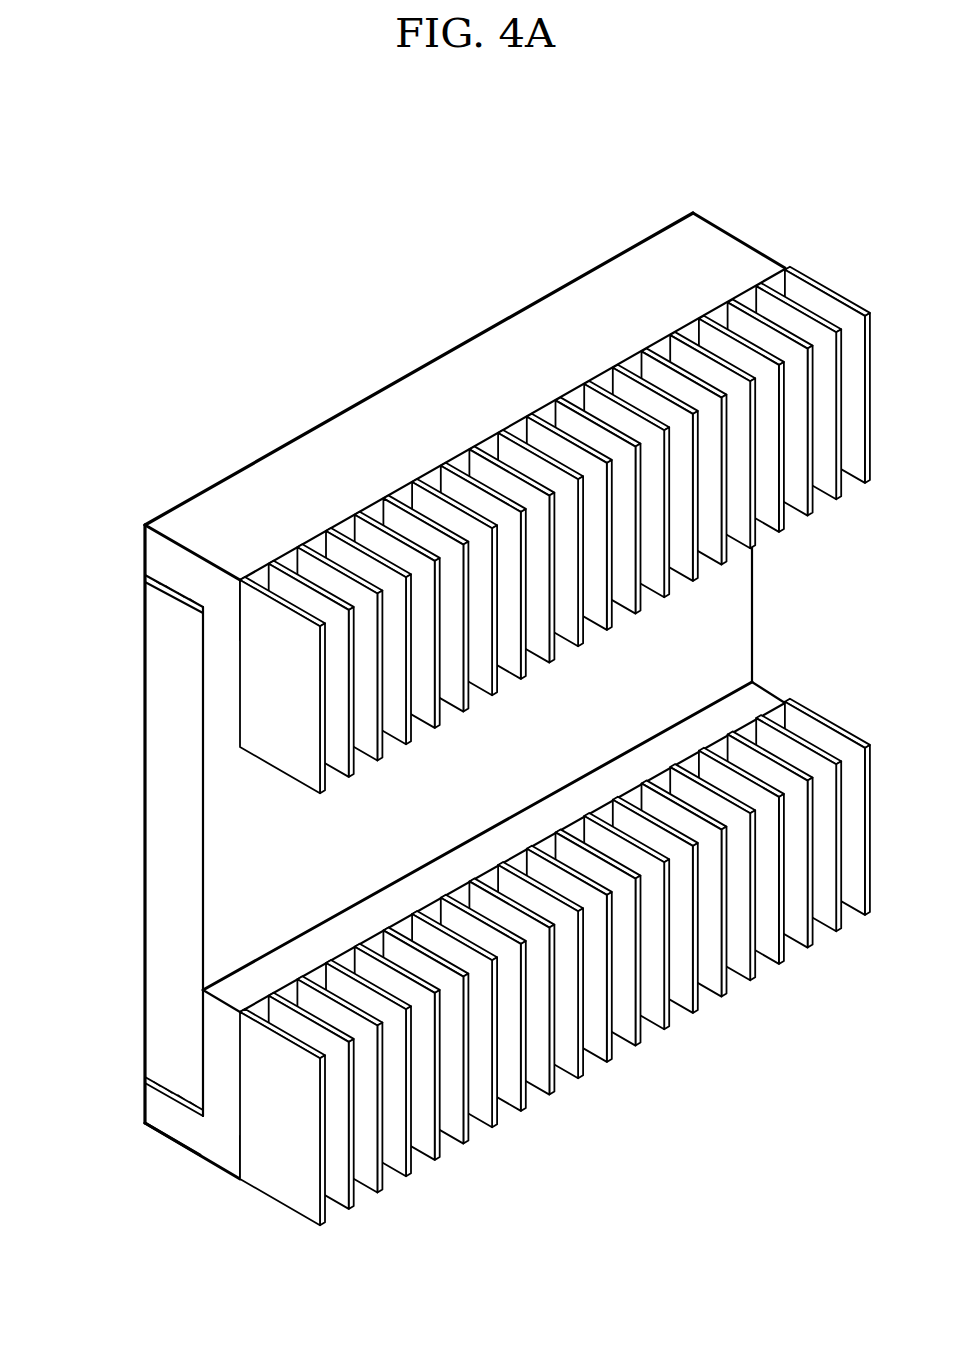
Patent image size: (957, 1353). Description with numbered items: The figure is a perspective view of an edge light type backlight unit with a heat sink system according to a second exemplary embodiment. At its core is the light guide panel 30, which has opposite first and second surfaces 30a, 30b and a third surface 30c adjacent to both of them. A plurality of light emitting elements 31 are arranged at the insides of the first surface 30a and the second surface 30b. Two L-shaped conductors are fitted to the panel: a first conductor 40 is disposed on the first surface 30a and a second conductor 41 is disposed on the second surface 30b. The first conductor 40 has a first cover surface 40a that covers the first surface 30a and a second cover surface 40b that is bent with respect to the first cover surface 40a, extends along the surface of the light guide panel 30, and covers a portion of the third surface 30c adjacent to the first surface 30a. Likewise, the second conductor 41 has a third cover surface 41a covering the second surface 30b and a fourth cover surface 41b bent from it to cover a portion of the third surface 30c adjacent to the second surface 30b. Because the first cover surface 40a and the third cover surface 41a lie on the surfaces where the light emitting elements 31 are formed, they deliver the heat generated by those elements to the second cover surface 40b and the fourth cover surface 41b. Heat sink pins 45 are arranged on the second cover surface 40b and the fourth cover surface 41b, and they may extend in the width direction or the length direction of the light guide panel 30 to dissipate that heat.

The light guide panel 30 is at (170, 838).
The first surface 30a is at (197, 607).
The second surface 30b is at (197, 1095).
The third surface 30c is at (230, 888).
The light emitting elements 31 is at (147, 586).
The first conductor 40 is at (160, 557).
The first cover surface 40a is at (190, 550).
The second cover surface 40b is at (240, 677).
The second conductor 41 is at (157, 1112).
The third cover surface 41a is at (175, 1138).
The fourth cover surface 41b is at (240, 1133).
The heat sink pins 45 is at (295, 632).